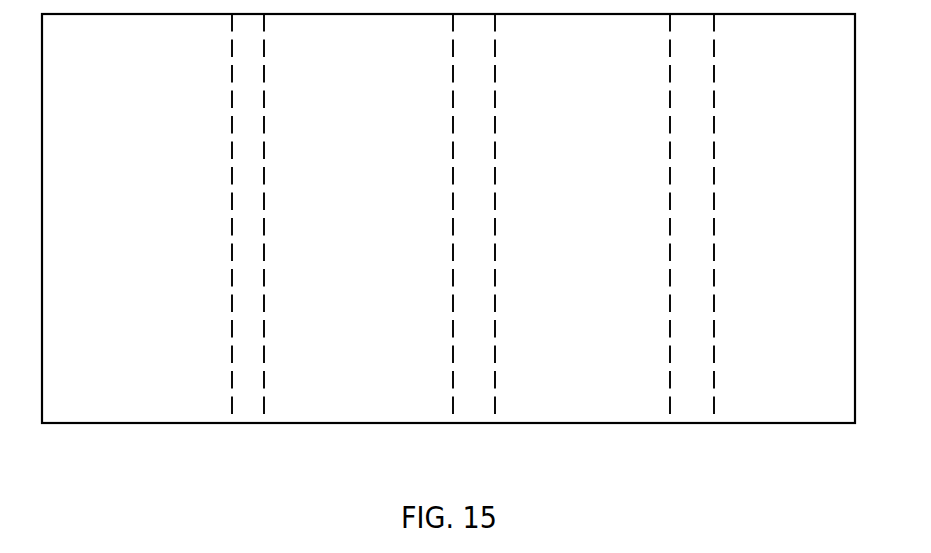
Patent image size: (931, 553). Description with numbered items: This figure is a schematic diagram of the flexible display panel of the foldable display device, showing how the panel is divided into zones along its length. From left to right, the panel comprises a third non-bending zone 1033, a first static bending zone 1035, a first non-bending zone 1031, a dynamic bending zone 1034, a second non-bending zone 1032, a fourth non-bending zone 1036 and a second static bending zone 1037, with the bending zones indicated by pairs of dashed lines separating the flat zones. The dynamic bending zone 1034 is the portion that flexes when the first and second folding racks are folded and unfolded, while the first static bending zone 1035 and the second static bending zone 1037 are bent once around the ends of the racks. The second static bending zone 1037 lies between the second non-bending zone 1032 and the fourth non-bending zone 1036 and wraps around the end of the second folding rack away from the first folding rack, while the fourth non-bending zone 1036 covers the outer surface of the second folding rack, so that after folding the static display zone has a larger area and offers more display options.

The third non-bending zone 1033 is at (153, 412).
The first static bending zone 1035 is at (252, 412).
The first non-bending zone 1031 is at (325, 412).
The dynamic bending zone 1034 is at (483, 412).
The second non-bending zone 1032 is at (575, 412).
The fourth non-bending zone 1036 is at (696, 412).
The second static bending zone 1037 is at (782, 412).